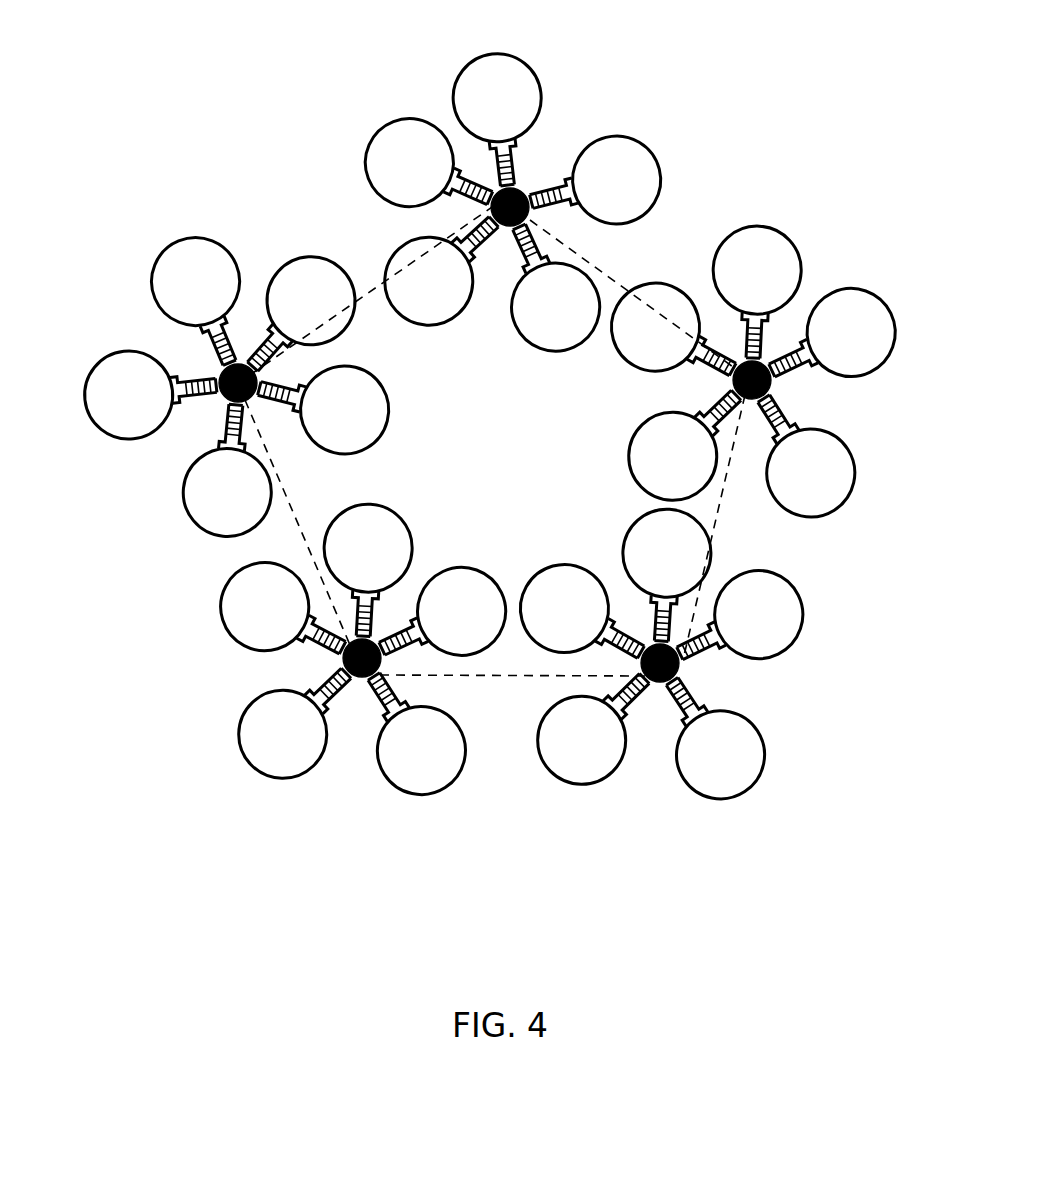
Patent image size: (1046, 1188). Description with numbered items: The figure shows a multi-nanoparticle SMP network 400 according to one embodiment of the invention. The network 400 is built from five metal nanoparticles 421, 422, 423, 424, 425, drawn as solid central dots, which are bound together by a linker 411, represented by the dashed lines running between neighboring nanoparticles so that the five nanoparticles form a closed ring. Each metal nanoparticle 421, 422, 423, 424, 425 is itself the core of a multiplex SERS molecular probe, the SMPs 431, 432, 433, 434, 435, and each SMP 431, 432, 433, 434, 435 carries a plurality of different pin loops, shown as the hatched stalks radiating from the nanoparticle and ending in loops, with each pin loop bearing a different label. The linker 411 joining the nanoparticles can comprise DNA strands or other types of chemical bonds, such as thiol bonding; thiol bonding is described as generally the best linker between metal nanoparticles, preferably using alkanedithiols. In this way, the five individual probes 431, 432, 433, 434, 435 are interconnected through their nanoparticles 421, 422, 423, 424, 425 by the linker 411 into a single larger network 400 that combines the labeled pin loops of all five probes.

The multi-nanoparticle SMP network 400 is at (98, 62).
The linker 411 is at (297, 525).
The metal nanoparticle 421 is at (217, 398).
The metal nanoparticle 422 is at (485, 202).
The metal nanoparticle 423 is at (768, 358).
The metal nanoparticle 424 is at (683, 677).
The metal nanoparticle 425 is at (352, 690).
The multiplex SERS molecular probe 431 is at (131, 310).
The multiplex SERS molecular probe 432 is at (418, 97).
The multiplex SERS molecular probe 433 is at (836, 401).
The multiplex SERS molecular probe 434 is at (730, 560).
The multiplex SERS molecular probe 435 is at (425, 694).